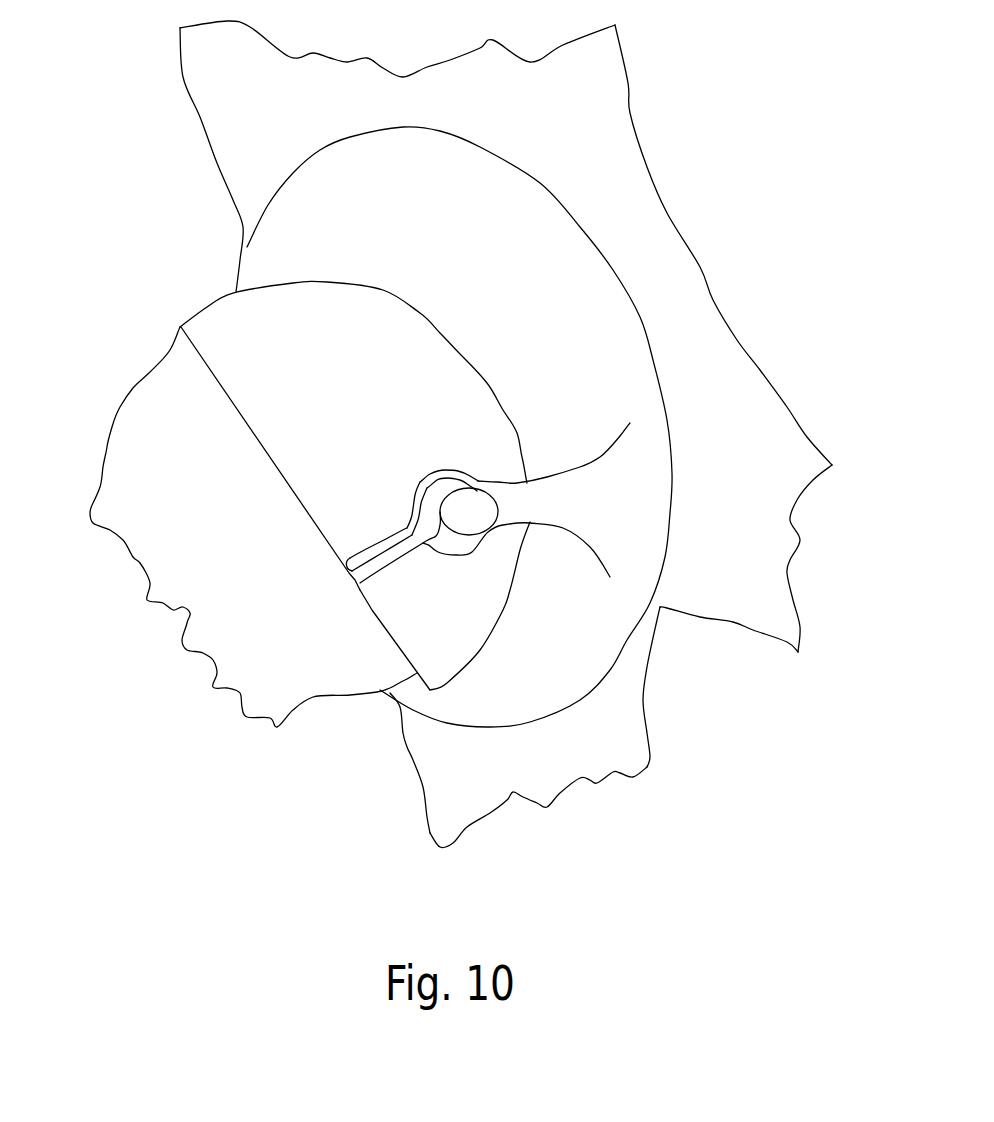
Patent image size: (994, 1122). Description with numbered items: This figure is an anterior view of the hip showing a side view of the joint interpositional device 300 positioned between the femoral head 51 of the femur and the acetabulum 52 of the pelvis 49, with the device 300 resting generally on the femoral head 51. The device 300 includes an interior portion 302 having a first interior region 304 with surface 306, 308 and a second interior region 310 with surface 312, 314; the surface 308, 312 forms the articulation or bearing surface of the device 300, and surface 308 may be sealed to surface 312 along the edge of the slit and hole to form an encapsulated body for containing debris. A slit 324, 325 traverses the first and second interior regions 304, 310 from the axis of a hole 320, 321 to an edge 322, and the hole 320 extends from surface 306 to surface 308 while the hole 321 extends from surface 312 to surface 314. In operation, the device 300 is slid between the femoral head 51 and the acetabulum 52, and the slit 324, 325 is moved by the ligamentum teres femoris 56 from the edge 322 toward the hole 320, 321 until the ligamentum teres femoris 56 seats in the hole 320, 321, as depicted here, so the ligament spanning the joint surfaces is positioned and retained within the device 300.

The pelvis 49 is at (663, 210).
The acetabulum 52 is at (523, 203).
The femoral head 51 is at (133, 443).
The joint interpositional device 300 is at (210, 297).
The interior portion 302 is at (237, 357).
The first interior region 304 is at (433, 468).
The surface 306 is at (348, 557).
The surface 308 is at (287, 544).
The second interior region 310 is at (420, 513).
The surface 312 is at (393, 537).
The surface 314 is at (408, 528).
The hole 320 is at (526, 655).
The hole 321 is at (457, 543).
The edge 322 is at (397, 647).
The slit 324 is at (270, 492).
The slit 325 is at (357, 582).
The ligamentum teres femoris 56 is at (482, 517).